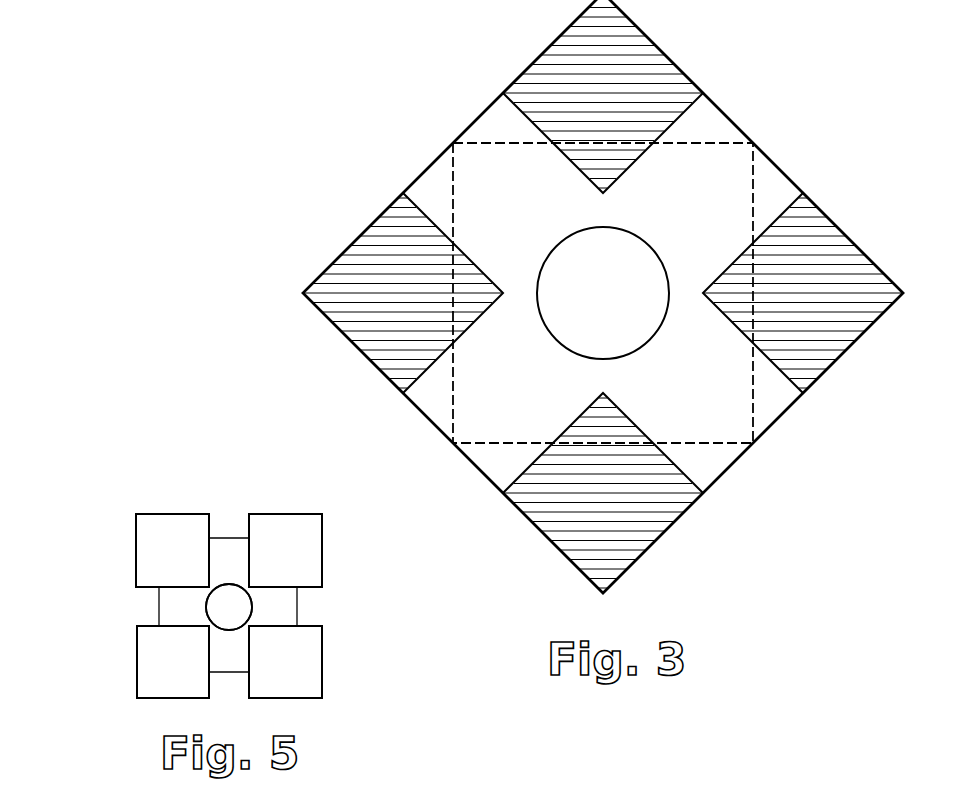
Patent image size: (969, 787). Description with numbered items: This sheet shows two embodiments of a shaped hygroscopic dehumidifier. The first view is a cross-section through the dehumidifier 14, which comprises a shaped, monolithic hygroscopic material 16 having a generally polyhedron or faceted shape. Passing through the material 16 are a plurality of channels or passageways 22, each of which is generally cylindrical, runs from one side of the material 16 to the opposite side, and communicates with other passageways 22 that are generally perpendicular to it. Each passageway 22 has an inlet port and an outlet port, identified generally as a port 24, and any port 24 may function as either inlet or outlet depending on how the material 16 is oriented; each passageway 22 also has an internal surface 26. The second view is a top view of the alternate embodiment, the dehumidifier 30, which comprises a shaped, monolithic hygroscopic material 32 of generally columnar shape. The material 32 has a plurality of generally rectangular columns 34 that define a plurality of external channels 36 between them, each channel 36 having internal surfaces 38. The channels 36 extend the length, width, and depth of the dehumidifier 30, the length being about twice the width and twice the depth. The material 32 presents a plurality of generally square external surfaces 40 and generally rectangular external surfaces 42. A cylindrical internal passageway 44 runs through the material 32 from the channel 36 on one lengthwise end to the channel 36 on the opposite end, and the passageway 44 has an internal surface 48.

In FIG. 3, the dehumidifier 14 is at (768, 103).
In FIG. 3, the monolithic hygroscopic material 16 is at (845, 351).
In FIG. 3, the passageways 22 is at (494, 208).
In FIG. 3, the port 24 is at (500, 95).
In FIG. 3, the internal surface 26 is at (521, 118).
In FIG. 5, the dehumidifier 30 is at (221, 597).
In FIG. 5, the monolithic hygroscopic material 32 is at (284, 692).
In FIG. 5, the rectangular columns 34 is at (181, 513).
In FIG. 5, the external channels 36 is at (228, 523).
In FIG. 5, the internal surfaces 38 is at (298, 620).
In FIG. 5, the square external surfaces 40 is at (158, 566).
In FIG. 5, the rectangular external surfaces 42 is at (320, 530).
In FIG. 5, the cylindrical internal passageway 44 is at (233, 594).
In FIG. 5, the internal surface 48 is at (216, 612).